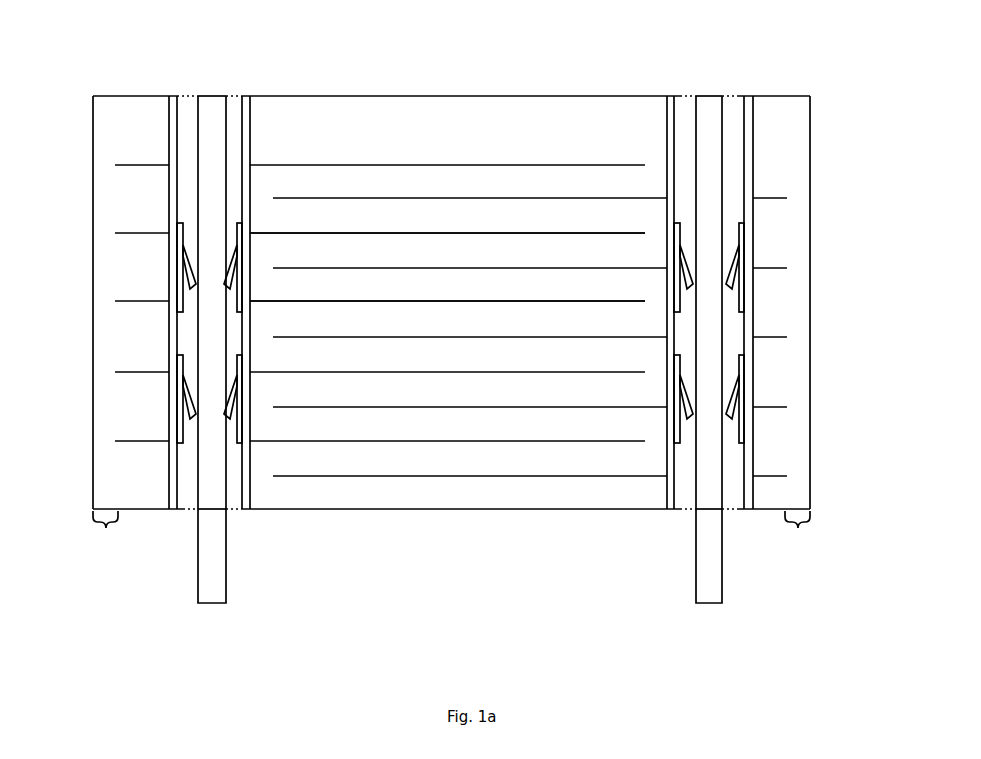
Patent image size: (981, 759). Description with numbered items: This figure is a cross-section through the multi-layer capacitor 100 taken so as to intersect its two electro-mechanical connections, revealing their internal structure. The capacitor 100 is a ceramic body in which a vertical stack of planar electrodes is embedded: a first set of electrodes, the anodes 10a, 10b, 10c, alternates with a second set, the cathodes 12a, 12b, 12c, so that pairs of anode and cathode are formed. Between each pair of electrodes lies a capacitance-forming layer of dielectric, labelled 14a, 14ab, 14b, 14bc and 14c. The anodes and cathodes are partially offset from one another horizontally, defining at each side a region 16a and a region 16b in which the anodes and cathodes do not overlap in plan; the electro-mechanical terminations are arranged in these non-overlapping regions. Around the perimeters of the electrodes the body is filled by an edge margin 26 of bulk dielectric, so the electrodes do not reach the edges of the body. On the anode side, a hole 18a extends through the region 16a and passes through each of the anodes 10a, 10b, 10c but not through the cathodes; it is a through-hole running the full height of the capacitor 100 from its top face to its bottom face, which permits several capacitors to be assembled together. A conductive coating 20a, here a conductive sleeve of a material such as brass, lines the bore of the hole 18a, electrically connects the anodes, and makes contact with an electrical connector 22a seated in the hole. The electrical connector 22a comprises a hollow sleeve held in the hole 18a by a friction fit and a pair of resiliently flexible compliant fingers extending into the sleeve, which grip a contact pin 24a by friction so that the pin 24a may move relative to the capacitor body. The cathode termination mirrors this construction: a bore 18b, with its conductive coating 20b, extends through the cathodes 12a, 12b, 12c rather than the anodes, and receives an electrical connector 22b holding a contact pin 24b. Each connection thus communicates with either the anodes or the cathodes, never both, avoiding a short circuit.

The multi-layer capacitor 100 is at (449, 70).
The anode 10a is at (125, 165).
The anode 10b is at (117, 233).
The anode 10c is at (120, 301).
The cathode 12a is at (776, 193).
The cathode 12b is at (780, 265).
The cathode 12c is at (780, 335).
The capacitance-forming layer 14a is at (470, 188).
The capacitance-forming layer 14ab is at (447, 223).
The capacitance-forming layer 14b is at (470, 258).
The capacitance-forming layer 14bc is at (447, 292).
The capacitance-forming layer 14c is at (470, 327).
The region 16a is at (278, 87).
The region 16b is at (795, 87).
The hole 18a is at (183, 513).
The bore 18b is at (683, 513).
The conductive coating 20a is at (246, 513).
The conductive coating 20b is at (752, 513).
The electrical connector 22a is at (180, 303).
The electrical connector 22b is at (742, 276).
The contact pin 24a is at (227, 589).
The contact pin 24b is at (693, 572).
The edge margin 26 is at (451, 533).